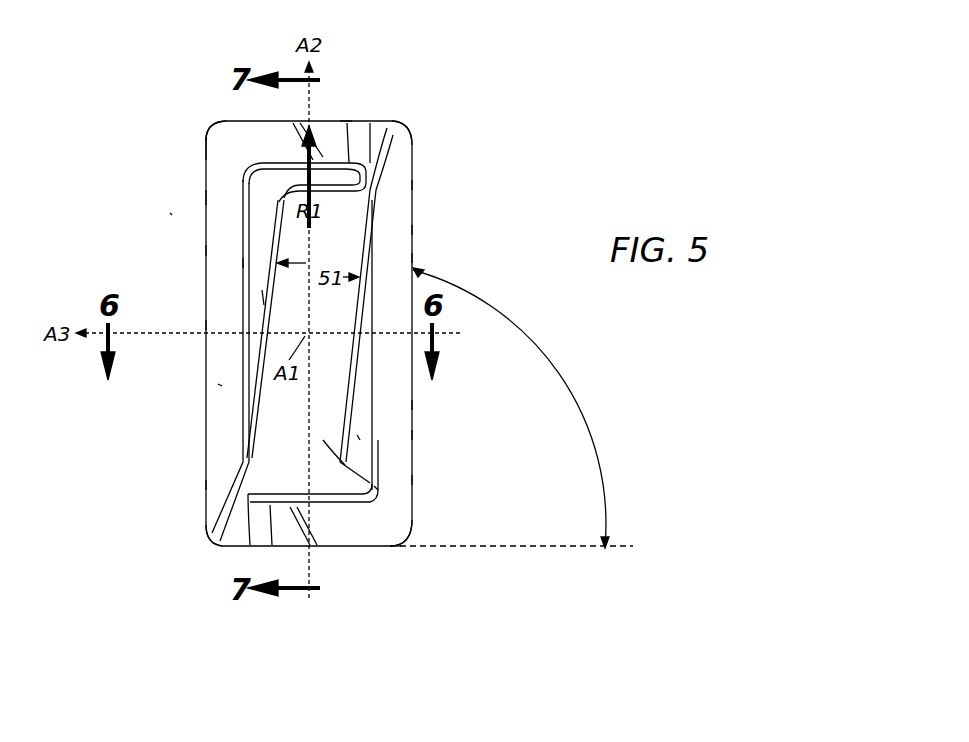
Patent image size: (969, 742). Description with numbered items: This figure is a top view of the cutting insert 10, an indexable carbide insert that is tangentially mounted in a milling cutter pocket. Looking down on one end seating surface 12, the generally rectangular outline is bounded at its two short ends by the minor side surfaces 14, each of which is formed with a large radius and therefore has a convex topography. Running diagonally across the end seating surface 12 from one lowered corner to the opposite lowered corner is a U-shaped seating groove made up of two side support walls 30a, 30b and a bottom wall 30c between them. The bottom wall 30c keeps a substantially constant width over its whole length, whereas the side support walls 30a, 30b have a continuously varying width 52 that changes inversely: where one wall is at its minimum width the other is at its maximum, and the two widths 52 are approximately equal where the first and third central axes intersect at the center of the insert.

The cutting insert 10 is at (570, 112).
The end seating surface 12 is at (281, 418).
The minor side surface 14 is at (345, 106).
The side support wall 30a is at (262, 300).
The side support wall 30b is at (358, 437).
The bottom wall 30c is at (378, 490).
The width 52 is at (243, 263).